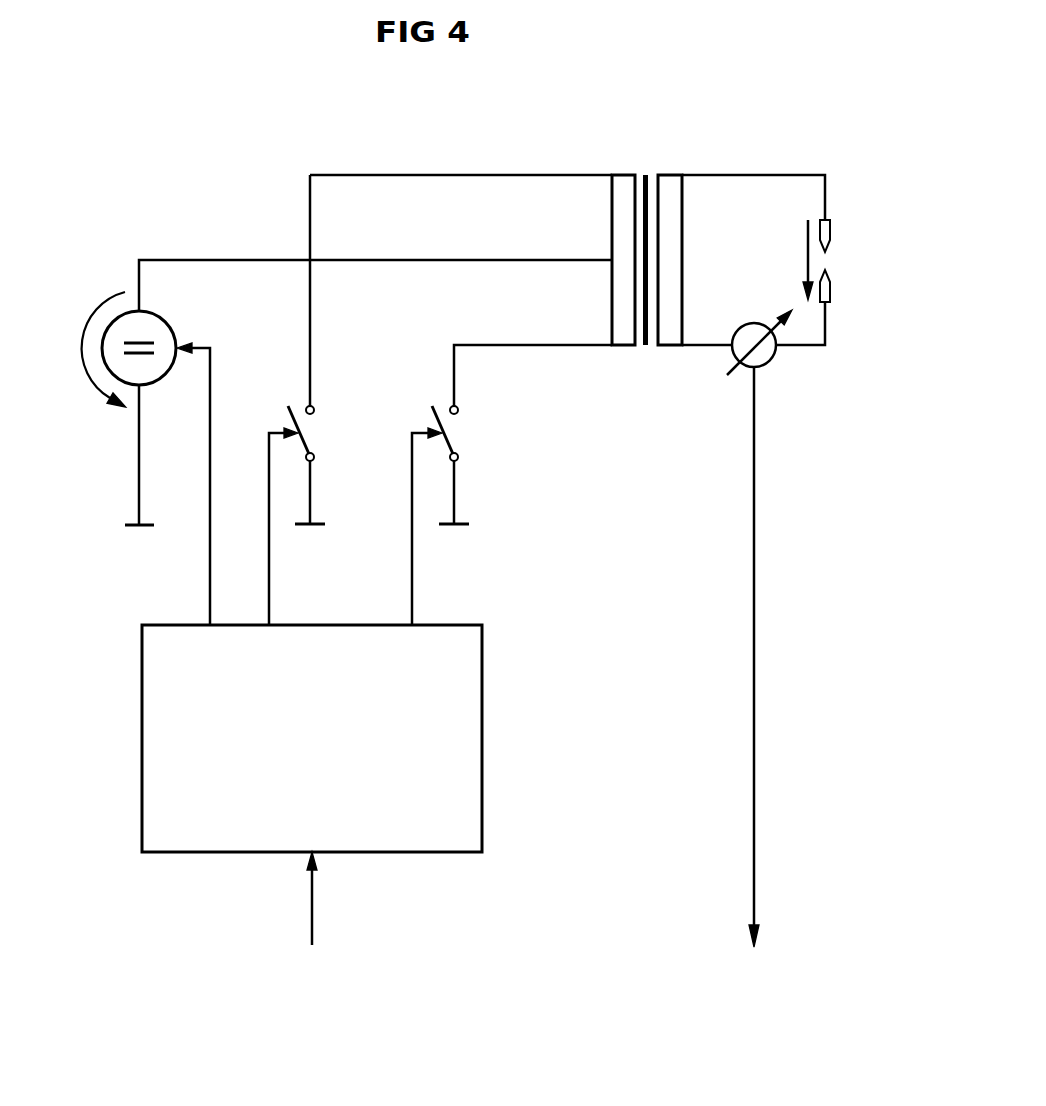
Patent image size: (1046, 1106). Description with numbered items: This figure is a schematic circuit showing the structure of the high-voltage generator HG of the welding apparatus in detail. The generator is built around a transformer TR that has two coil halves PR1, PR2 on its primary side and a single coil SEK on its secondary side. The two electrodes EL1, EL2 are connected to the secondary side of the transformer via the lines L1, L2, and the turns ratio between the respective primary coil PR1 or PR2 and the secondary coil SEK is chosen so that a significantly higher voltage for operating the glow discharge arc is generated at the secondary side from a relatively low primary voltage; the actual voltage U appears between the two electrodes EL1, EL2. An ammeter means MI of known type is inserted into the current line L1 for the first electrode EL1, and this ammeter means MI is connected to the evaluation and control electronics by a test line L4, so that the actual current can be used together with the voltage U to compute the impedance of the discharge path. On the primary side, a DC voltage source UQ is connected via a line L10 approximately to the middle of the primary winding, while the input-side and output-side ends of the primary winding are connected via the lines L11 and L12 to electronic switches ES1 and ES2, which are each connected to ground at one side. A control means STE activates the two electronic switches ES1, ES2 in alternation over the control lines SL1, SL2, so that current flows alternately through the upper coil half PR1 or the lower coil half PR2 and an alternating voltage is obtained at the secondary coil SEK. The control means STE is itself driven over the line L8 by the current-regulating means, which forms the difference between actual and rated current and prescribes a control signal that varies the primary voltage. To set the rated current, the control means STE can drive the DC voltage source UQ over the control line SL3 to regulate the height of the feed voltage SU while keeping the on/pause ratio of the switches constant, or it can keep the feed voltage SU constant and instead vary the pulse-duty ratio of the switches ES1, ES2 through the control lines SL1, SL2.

The high-voltage generator HG is at (322, 135).
The line L11 is at (478, 175).
The line L10 is at (231, 260).
The line L12 is at (483, 345).
The transformer TR is at (643, 152).
The coil half PR1 is at (598, 217).
The coil half PR2 is at (598, 302).
The secondary coil SEK is at (682, 215).
The line L2 is at (757, 175).
The current line L1 is at (800, 347).
The first electrode EL1 is at (831, 290).
The second electrode EL2 is at (831, 230).
The actual voltage U is at (801, 260).
The ammeter means MI is at (745, 325).
The test line L4 is at (757, 738).
The feed voltage SU is at (82, 370).
The DC voltage source UQ is at (163, 376).
The control line SL3 is at (210, 372).
The control line SL1 is at (269, 585).
The control line SL2 is at (412, 585).
The electronic switch ES1 is at (318, 425).
The electronic switch ES2 is at (478, 432).
The control means STE is at (482, 737).
The line L8 is at (312, 918).